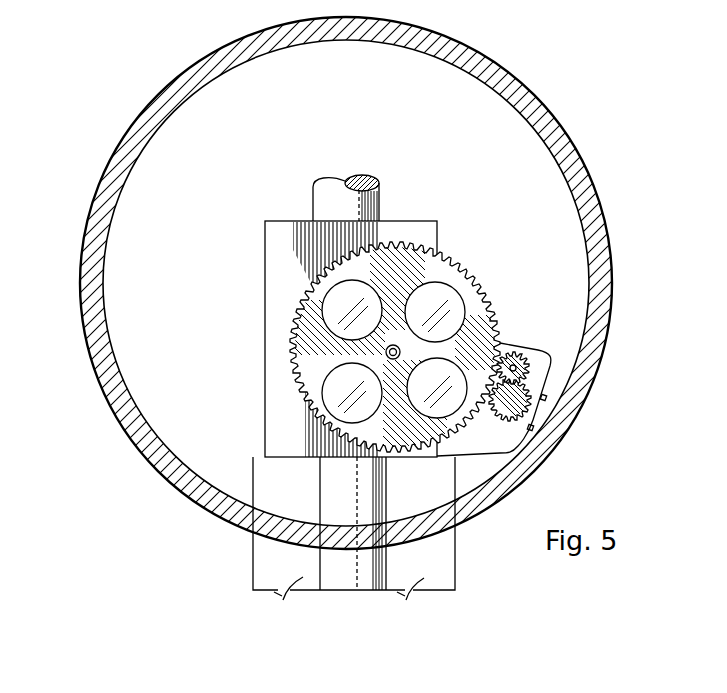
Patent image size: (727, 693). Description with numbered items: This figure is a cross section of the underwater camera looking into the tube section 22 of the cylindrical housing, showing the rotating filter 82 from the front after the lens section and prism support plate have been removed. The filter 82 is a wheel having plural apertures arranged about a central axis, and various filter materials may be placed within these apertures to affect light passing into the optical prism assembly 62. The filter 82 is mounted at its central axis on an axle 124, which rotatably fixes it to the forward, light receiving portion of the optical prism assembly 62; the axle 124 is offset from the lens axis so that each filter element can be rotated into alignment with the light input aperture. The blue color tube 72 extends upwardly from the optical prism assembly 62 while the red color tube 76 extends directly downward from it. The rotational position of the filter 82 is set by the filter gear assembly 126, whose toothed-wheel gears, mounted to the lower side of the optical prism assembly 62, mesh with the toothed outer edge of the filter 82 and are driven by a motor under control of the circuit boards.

The tube section 22 is at (94, 201).
The optical prism assembly 62 is at (284, 232).
The blue color tube 72 is at (366, 205).
The red color tube 76 is at (372, 497).
The rotating filter 82 is at (307, 284).
The axle 124 is at (407, 334).
The filter gear assembly 126 is at (534, 358).